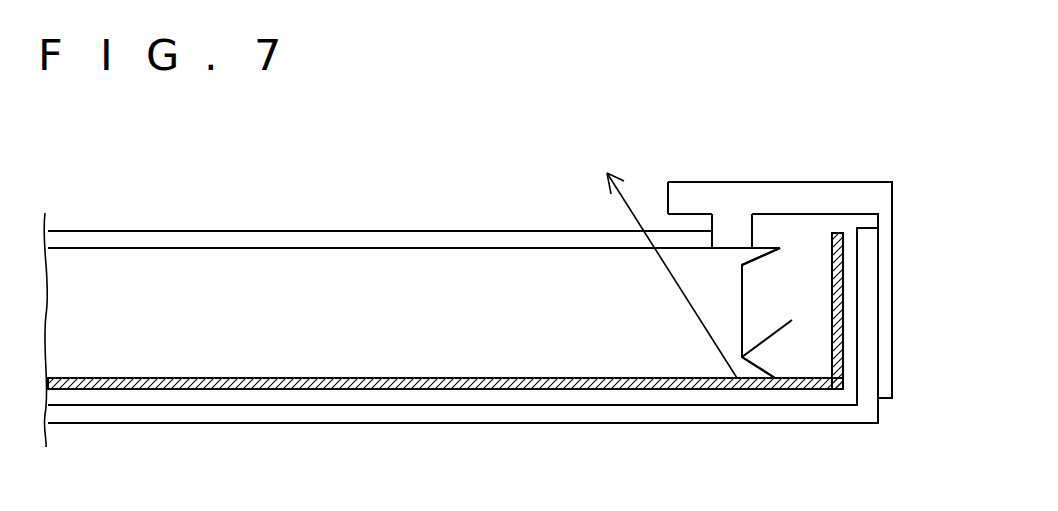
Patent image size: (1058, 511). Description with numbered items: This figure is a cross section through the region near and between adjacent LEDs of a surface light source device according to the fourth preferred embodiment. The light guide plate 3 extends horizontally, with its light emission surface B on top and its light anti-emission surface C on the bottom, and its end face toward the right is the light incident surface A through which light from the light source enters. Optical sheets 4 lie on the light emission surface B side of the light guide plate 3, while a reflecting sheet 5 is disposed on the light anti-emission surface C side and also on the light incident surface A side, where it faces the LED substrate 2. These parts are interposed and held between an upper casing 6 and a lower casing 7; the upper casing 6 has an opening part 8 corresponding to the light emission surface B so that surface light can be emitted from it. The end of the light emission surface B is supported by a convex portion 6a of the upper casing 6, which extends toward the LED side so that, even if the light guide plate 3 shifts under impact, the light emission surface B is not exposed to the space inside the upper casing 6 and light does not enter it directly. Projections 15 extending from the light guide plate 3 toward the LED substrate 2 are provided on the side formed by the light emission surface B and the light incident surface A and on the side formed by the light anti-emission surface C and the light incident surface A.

The LED substrate 2 is at (853, 400).
The light guide plate 3 is at (499, 272).
The optical sheets 4 is at (313, 241).
The reflecting sheet 5 is at (265, 390).
The upper casing 6 is at (801, 196).
The convex portion 6a is at (726, 235).
The lower casing 7 is at (445, 415).
The opening part 8 is at (668, 196).
The projections 15 is at (751, 256).
The light incident surface A is at (742, 298).
The light emission surface B is at (411, 247).
The light anti-emission surface C is at (358, 390).